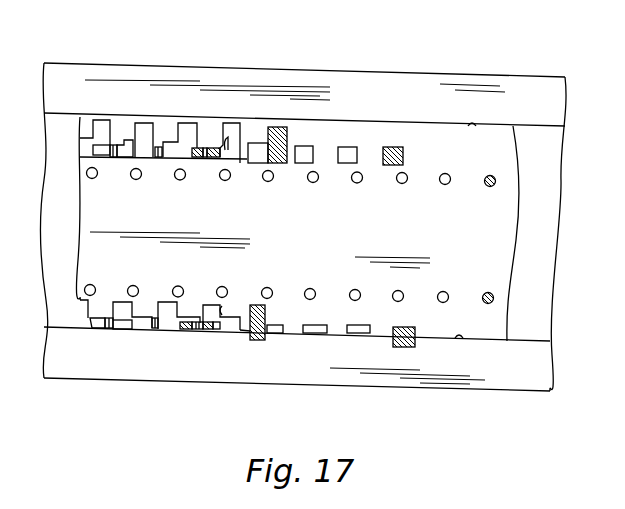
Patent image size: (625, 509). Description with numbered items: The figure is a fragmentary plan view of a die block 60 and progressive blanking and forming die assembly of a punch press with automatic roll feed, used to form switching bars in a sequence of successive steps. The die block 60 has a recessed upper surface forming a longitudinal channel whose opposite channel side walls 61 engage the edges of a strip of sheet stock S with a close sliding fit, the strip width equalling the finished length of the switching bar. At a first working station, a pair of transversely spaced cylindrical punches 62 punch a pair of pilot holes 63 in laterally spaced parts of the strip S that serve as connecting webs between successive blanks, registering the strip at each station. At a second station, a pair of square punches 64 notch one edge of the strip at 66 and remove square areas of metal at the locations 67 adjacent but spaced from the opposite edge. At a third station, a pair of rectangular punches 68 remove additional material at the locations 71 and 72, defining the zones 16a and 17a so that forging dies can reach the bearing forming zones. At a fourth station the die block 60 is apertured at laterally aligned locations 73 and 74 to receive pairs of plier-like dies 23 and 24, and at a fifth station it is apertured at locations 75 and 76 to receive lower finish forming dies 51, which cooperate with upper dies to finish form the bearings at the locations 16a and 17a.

The lower finish forming dies 51 is at (103, 148).
The aperture location 76 is at (126, 148).
The plier-like dies 23 is at (196, 152).
The plier-like dies 24 is at (210, 152).
The aperture location 74 is at (230, 153).
The material removal location 72 is at (238, 133).
The bearing forming zone 17a is at (248, 158).
The rectangular punches 68 is at (287, 137).
The square metal removal locations 67 is at (341, 150).
The square punches 64 is at (404, 158).
The edge notch 66 is at (347, 335).
The channel side walls 61 is at (472, 125).
The pilot holes 63 is at (443, 184).
The cylindrical punches 62 is at (490, 187).
The material removal location 71 is at (222, 315).
The aperture location 75 is at (96, 330).
The aperture location 73 is at (185, 330).
The bearing forming zone 16a is at (244, 331).
The die block 60 is at (488, 391).
The sheet stock strip S is at (522, 233).